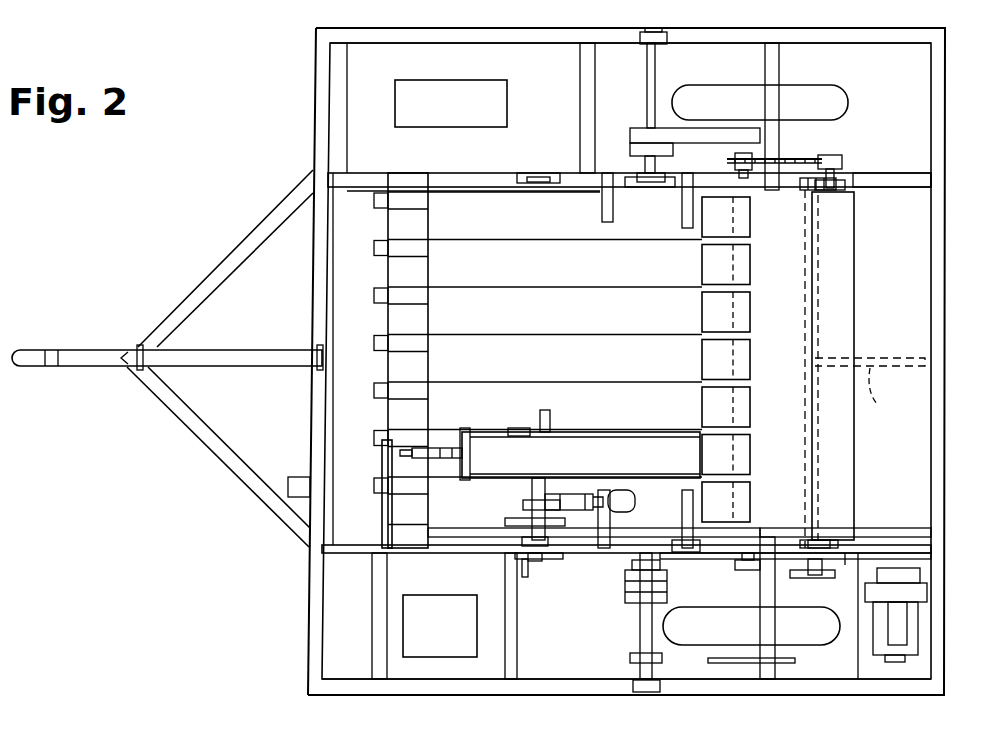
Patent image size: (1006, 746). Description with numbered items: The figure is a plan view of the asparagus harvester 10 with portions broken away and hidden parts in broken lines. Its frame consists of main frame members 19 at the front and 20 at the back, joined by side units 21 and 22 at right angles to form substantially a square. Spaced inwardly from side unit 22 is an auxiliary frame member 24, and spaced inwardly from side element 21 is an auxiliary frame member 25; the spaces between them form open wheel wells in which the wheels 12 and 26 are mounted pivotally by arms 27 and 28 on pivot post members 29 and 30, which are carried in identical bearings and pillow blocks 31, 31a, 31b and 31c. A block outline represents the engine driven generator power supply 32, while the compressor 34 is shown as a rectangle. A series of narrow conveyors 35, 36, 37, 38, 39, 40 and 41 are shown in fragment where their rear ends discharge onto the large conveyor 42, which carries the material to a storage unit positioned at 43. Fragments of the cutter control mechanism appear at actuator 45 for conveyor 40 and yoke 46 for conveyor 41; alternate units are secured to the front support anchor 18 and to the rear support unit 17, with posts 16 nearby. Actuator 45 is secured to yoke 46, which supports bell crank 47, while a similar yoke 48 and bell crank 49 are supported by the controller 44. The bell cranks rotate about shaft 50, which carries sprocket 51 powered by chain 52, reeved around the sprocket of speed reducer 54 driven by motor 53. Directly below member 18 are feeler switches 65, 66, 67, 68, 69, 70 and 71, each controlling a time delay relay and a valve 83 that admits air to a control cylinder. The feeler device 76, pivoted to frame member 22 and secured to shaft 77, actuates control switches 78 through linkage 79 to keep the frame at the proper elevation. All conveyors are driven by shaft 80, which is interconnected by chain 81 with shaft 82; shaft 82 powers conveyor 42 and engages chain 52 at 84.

The apparatus 10 is at (308, 126).
The wheel 12 is at (795, 620).
The support post 16 is at (682, 209).
The rear support unit 17 is at (606, 175).
The front support anchor 18 is at (384, 510).
The main frame member 19 is at (312, 283).
The main frame member 20 is at (947, 290).
The side frame unit 21 is at (520, 30).
The side frame unit 22 is at (527, 695).
The auxiliary frame member 24 is at (877, 540).
The auxiliary frame member 25 is at (900, 186).
The wheel 26 is at (848, 105).
The arm 27 is at (625, 590).
The arm 28 is at (630, 128).
The pivot post member 29 is at (640, 628).
The pivot post member 30 is at (648, 68).
The bearing and pillow block 31 is at (667, 30).
The bearing and pillow block 31a is at (662, 178).
The bearing and pillow block 31b is at (676, 546).
The bearing and pillow block 31c is at (655, 695).
The engine driven generator power supply 32 is at (452, 648).
The compressor 34 is at (455, 90).
The narrow conveyor 35 is at (752, 220).
The narrow conveyor 36 is at (752, 264).
The narrow conveyor 37 is at (752, 312).
The narrow conveyor 38 is at (752, 358).
The narrow conveyor 39 is at (752, 404).
The narrow conveyor 40 is at (752, 450).
The narrow conveyor 41 is at (752, 495).
The large conveyor 42 is at (845, 322).
The storage unit position 43 is at (905, 383).
The controller 44 is at (438, 442).
The actuator 45 is at (591, 490).
The yoke 46 is at (532, 492).
The bell crank 47 is at (510, 519).
The yoke 48 is at (467, 430).
The bell crank 49 is at (518, 432).
The shaft 50 is at (536, 561).
The sprocket 51 is at (525, 559).
The chain 52 is at (560, 555).
The motor 53 is at (920, 612).
The speed reducer 54 is at (915, 576).
The feeler switch 65 is at (374, 201).
The feeler switch 66 is at (374, 248).
The feeler switch 67 is at (374, 295).
The feeler switch 68 is at (374, 342).
The feeler switch 69 is at (374, 390).
The feeler switch 70 is at (374, 437).
The feeler switch 71 is at (374, 485).
The feeler device 76 is at (887, 394).
The shaft 77 is at (778, 540).
The minimal movement control switch 78 is at (742, 566).
The linkage 79 is at (795, 571).
The shaft 80 is at (742, 158).
The chain 81 is at (828, 158).
The shaft 82 is at (855, 170).
The valve 83 is at (635, 501).
The chain connection 84 is at (845, 570).